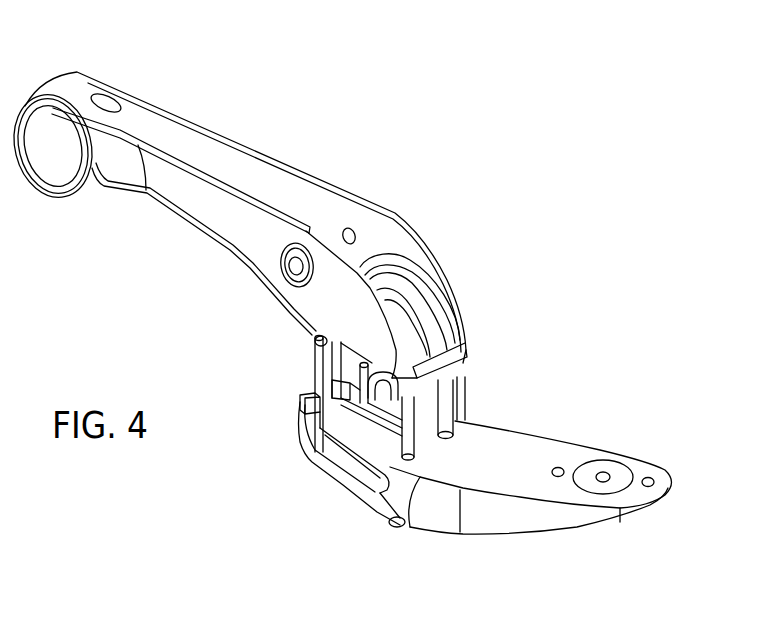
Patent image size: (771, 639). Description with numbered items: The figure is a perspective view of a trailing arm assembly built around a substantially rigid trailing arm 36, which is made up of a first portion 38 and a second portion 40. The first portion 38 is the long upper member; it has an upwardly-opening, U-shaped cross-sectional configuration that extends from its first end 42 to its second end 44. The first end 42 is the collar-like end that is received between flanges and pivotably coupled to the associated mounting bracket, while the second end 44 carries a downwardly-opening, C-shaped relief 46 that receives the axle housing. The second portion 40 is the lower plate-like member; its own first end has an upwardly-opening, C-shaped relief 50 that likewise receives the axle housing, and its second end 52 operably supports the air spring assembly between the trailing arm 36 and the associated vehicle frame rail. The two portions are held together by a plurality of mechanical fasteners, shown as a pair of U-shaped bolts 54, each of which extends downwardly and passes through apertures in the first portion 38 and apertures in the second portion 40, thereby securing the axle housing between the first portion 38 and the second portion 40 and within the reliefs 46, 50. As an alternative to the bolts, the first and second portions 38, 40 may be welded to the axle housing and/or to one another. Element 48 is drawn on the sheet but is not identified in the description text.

The trailing arm 36 is at (357, 124).
The first portion 38 is at (243, 142).
The second portion 40 is at (445, 537).
The first end 42 is at (115, 153).
The second end 44 is at (400, 247).
The C-shaped relief 46 is at (335, 362).
The bar 48 is at (345, 473).
The C-shaped relief 50 is at (303, 447).
The second end 52 is at (582, 517).
The U-shaped bolts 54 is at (432, 290).